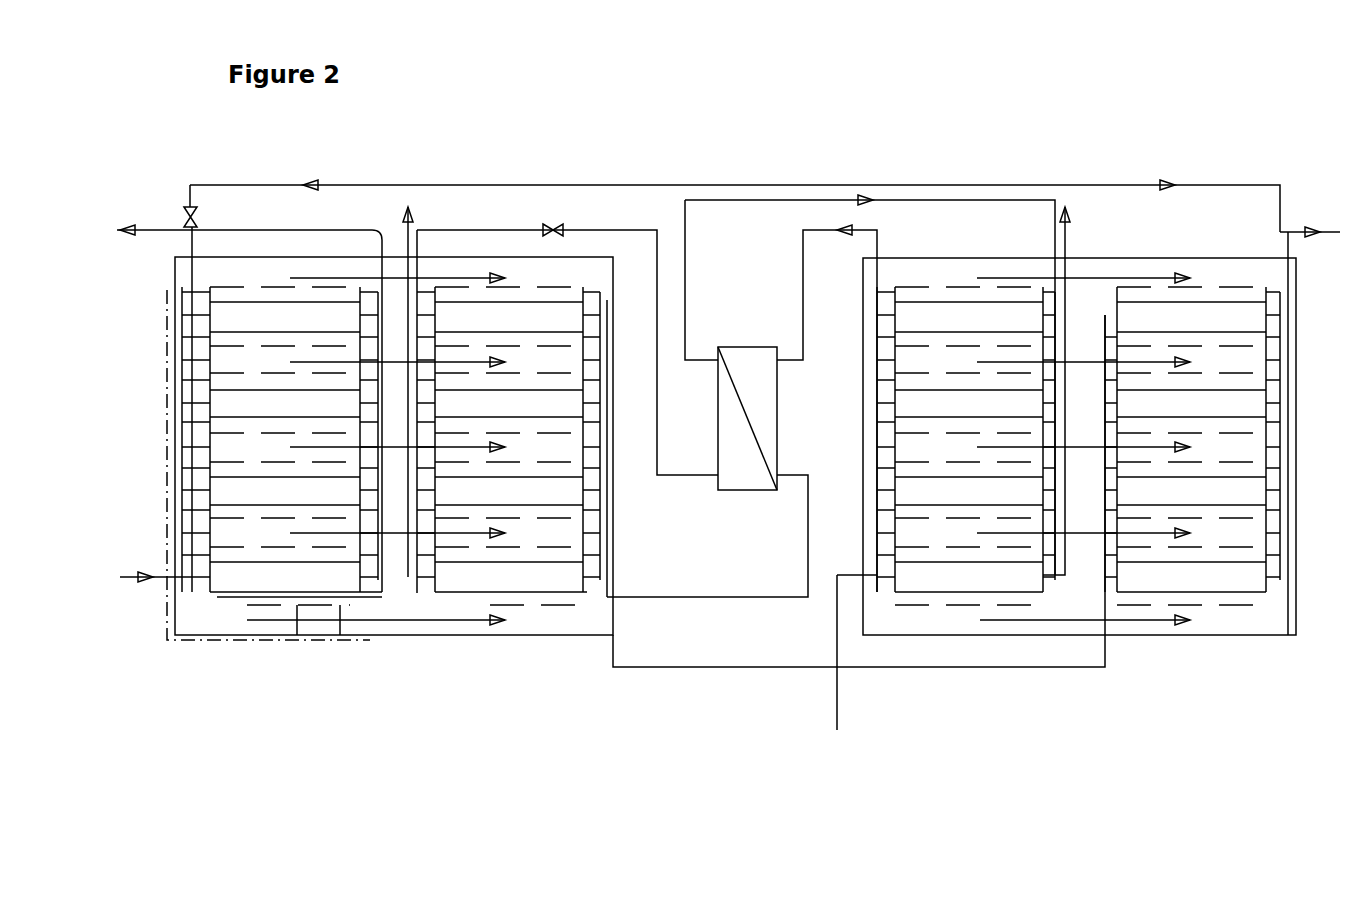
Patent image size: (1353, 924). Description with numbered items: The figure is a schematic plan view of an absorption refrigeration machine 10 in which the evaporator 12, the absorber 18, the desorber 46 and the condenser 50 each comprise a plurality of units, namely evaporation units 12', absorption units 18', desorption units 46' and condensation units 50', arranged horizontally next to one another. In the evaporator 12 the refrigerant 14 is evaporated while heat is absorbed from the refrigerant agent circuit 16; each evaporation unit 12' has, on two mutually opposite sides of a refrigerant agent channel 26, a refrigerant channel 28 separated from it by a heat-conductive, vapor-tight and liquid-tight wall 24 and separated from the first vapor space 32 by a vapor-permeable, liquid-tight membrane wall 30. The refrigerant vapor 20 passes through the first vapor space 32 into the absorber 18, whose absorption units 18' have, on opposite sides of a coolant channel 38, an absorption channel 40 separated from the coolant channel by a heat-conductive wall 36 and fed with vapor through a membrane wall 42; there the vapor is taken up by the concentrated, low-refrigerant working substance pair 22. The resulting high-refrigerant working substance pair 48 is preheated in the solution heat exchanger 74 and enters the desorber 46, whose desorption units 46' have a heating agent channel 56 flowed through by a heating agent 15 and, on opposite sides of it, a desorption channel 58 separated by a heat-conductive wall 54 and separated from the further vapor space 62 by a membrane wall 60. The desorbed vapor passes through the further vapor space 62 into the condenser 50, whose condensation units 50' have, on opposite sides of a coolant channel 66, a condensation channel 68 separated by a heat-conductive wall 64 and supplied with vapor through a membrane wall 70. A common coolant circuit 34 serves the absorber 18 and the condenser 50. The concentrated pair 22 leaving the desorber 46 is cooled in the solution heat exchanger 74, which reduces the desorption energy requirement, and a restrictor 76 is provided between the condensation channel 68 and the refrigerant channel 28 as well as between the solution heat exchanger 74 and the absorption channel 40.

The absorption refrigeration machine 10 is at (641, 117).
The evaporator 12 is at (277, 495).
The evaporation unit 12' is at (268, 500).
The refrigerant 14 is at (332, 184).
The heating agent 15 is at (1065, 228).
The refrigerant agent circuit 16 is at (142, 228).
The absorber 18 is at (521, 673).
The absorption unit 18' is at (572, 682).
The refrigerant vapor 20 is at (343, 277).
The concentrated, low-refrigerant working substance pair 22 is at (607, 229).
The heat-conductive, vapor-tight and liquid-tight wall 24 is at (340, 640).
The refrigerant agent channel 26 is at (220, 580).
The refrigerant channel 28 is at (232, 555).
The vapor-permeable, liquid-tight membrane wall 30 is at (298, 640).
The first vapor space 32 is at (388, 612).
The coolant circuit 34 is at (416, 212).
The heat-conductive, vapor-tight and liquid-tight wall 36 is at (560, 563).
The coolant channel 38 is at (452, 580).
The absorption channel 40 is at (523, 555).
The vapor-permeable, liquid-tight membrane wall 42 is at (560, 540).
The desorber 46 is at (966, 537).
The desorption unit 46' is at (939, 696).
The high-refrigerant working substance pair 48 is at (822, 231).
The condenser 50 is at (1083, 518).
The condensation unit 50' is at (1162, 712).
The heat-conductive, vapor-tight and liquid-tight wall 54 is at (1020, 640).
The heating agent channel 56 is at (900, 583).
The desorption channel 58 is at (967, 640).
The vapor-permeable, liquid-tight membrane wall 60 is at (908, 540).
The further vapor space 62 is at (1097, 615).
The heat-conductive, vapor-tight and liquid-tight wall 64 is at (1203, 640).
The coolant channel 66 is at (1265, 582).
The condensation channel 68 is at (1263, 640).
The vapor-permeable, liquid-tight membrane wall 70 is at (1227, 640).
The solution heat exchanger 74 is at (750, 481).
The restrictor 76 is at (192, 207).